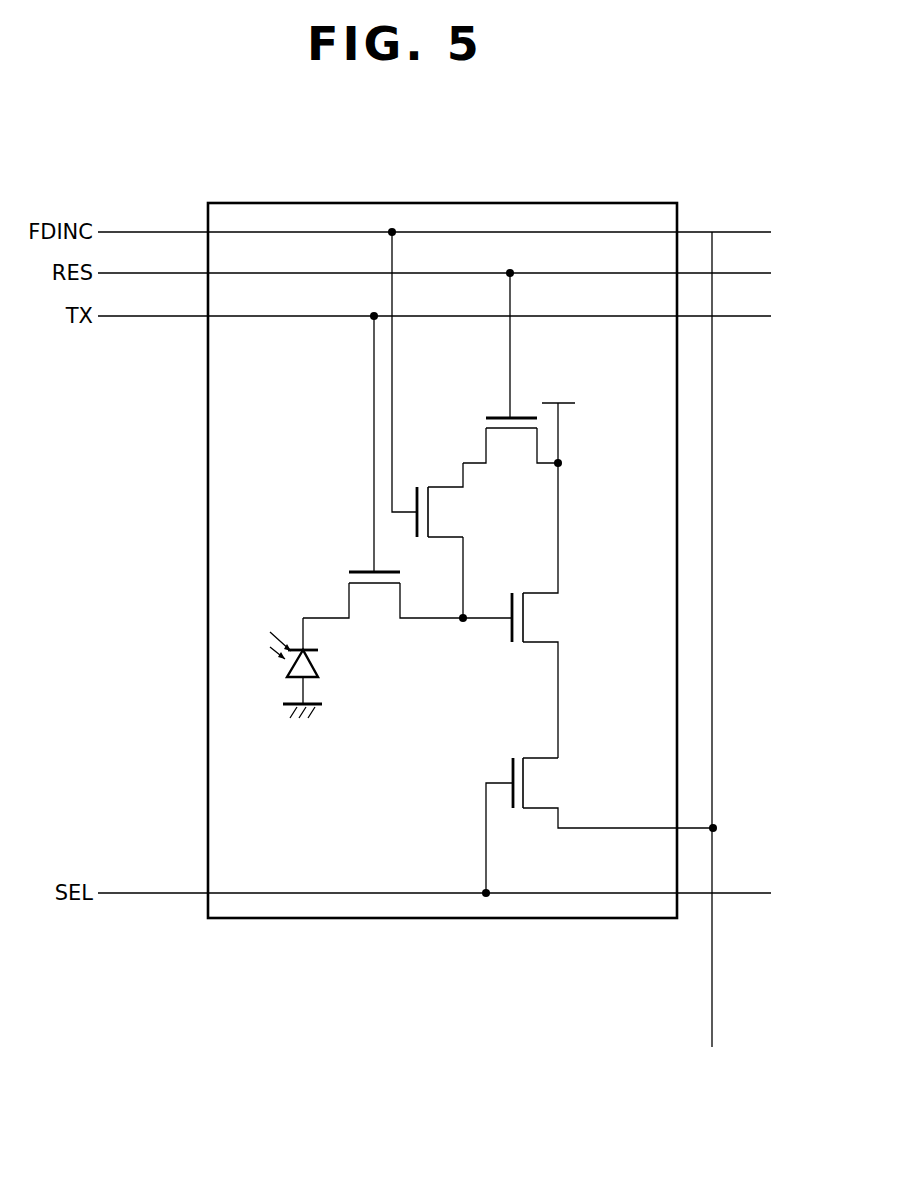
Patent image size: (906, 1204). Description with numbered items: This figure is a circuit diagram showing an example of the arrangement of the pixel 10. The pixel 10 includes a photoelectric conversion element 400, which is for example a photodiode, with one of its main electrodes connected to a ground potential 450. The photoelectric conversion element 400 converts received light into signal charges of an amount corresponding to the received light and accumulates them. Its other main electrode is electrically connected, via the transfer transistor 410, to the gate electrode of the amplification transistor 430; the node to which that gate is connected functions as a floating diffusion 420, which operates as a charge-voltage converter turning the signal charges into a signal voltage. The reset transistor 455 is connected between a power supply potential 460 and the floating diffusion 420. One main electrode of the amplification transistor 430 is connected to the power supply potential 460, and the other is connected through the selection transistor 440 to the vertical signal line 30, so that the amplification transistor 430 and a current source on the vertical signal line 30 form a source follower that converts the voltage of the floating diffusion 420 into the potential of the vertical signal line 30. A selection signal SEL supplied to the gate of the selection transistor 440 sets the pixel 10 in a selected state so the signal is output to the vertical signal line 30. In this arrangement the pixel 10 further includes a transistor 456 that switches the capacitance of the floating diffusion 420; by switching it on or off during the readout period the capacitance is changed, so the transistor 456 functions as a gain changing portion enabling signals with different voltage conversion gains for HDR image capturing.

The pixel 10 is at (635, 203).
The vertical signal line 30 is at (713, 978).
The photoelectric conversion element 400 is at (320, 665).
The transfer transistor 410 is at (375, 608).
The floating diffusion 420 is at (463, 625).
The amplification transistor 430 is at (553, 617).
The selection transistor 440 is at (528, 750).
The ground potential 450 is at (320, 712).
The reset transistor 455 is at (483, 423).
The transistor 456 is at (455, 513).
The power supply potential 460 is at (583, 404).